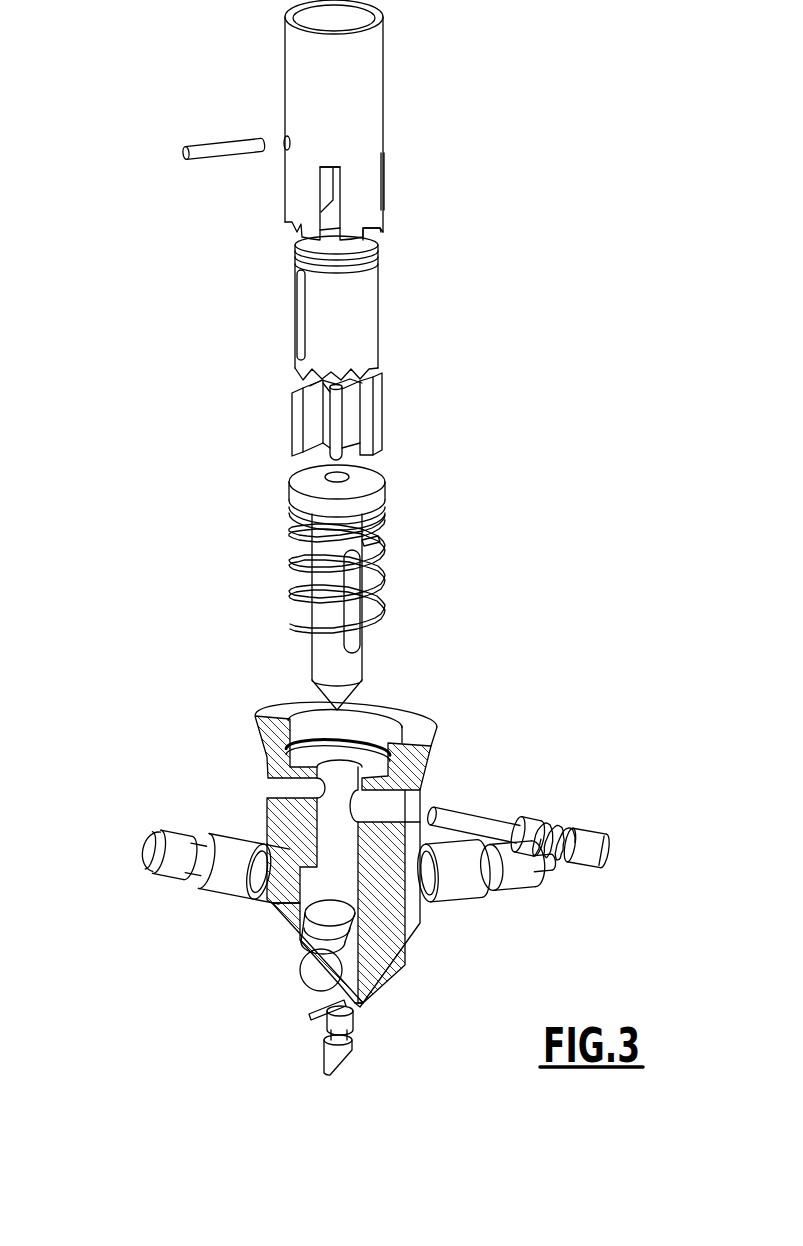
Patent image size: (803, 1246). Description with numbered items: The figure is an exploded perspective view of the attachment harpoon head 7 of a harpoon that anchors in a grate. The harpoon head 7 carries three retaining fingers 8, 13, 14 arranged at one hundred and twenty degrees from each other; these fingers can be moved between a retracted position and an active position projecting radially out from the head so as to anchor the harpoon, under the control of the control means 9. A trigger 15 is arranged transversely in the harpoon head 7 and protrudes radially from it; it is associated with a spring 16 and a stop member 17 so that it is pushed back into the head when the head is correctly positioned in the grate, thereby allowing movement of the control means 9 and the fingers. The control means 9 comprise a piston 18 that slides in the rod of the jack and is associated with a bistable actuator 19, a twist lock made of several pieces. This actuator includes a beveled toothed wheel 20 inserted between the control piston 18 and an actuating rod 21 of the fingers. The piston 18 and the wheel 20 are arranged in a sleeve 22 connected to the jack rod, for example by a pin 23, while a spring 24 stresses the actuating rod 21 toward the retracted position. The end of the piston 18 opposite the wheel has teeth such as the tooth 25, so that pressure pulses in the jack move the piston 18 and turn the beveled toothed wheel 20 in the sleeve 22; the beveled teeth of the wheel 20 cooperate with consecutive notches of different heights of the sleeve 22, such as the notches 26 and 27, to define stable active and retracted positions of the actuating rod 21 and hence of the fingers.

The harpoon head 7 is at (193, 938).
The retaining finger 8 is at (500, 903).
The control means 9 is at (240, 558).
The retaining finger 13 is at (138, 872).
The retaining finger 14 is at (285, 983).
The trigger 15 is at (488, 805).
The spring 16 is at (562, 820).
The stop member 17 is at (618, 847).
The piston 18 is at (372, 307).
The bistable actuator 19 is at (248, 393).
The beveled toothed wheel 20 is at (397, 412).
The actuating rod 21 is at (365, 548).
The sleeve 22 is at (393, 152).
The pin 23 is at (200, 137).
The spring 24 is at (396, 586).
The tooth 25 is at (388, 367).
The notch 26 is at (336, 160).
The notch 27 is at (380, 230).